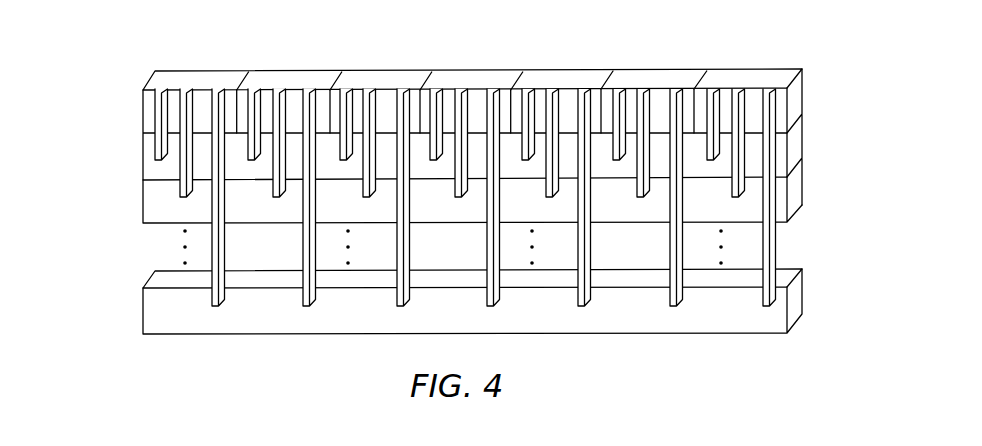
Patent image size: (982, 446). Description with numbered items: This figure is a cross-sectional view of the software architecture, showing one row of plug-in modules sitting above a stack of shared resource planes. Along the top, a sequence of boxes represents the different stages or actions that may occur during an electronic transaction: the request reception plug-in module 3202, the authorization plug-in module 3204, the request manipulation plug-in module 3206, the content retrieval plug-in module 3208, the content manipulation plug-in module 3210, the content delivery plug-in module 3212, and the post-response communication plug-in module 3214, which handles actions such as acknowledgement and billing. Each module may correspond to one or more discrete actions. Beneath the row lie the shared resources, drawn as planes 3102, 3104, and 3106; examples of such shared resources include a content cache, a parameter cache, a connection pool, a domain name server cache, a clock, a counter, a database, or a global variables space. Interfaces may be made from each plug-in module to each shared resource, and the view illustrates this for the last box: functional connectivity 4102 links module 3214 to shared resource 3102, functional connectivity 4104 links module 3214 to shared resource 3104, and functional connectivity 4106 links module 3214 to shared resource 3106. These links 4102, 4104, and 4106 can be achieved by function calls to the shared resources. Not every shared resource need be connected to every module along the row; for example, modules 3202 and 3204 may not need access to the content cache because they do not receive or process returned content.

The shared resource plane 3102 is at (142, 151).
The shared resource plane 3104 is at (142, 205).
The shared resource plane 3106 is at (142, 318).
The request reception plug-in module 3202 is at (192, 72).
The authorization plug-in module 3204 is at (285, 72).
The request manipulation plug-in module 3206 is at (378, 72).
The content retrieval plug-in module 3208 is at (468, 70).
The content manipulation plug-in module 3210 is at (557, 70).
The content delivery plug-in module 3212 is at (650, 68).
The post-response communication plug-in module 3214 is at (794, 203).
The functional connectivity 4102 is at (713, 102).
The functional connectivity 4104 is at (740, 158).
The functional connectivity 4106 is at (768, 307).